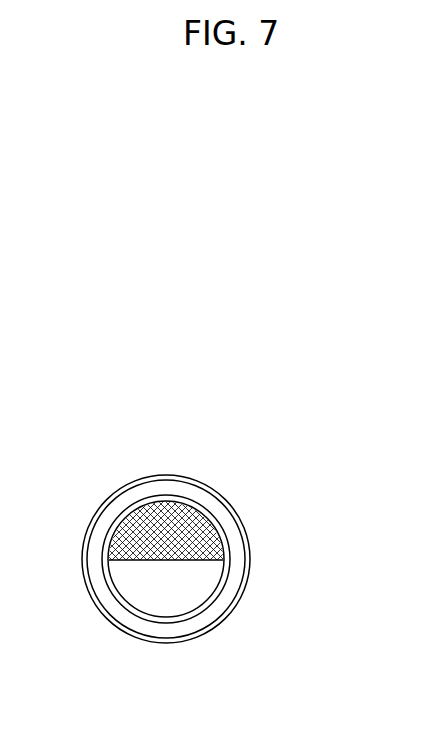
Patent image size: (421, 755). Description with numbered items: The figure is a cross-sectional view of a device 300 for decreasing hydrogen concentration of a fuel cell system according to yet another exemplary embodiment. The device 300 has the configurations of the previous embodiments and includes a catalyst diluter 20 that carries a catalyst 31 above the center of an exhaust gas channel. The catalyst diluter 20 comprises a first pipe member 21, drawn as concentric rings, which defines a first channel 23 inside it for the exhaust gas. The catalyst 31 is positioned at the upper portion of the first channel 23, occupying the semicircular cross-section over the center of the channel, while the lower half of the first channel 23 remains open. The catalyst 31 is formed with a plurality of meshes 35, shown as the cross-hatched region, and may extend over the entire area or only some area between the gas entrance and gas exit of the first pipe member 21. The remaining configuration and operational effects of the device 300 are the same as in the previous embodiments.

The device for decreasing hydrogen concentration 300 is at (184, 394).
The catalyst diluter 20 is at (182, 596).
The first pipe member 21 is at (230, 587).
The first channel 23 is at (163, 594).
The catalyst 31 is at (140, 591).
The meshes 35 is at (119, 534).